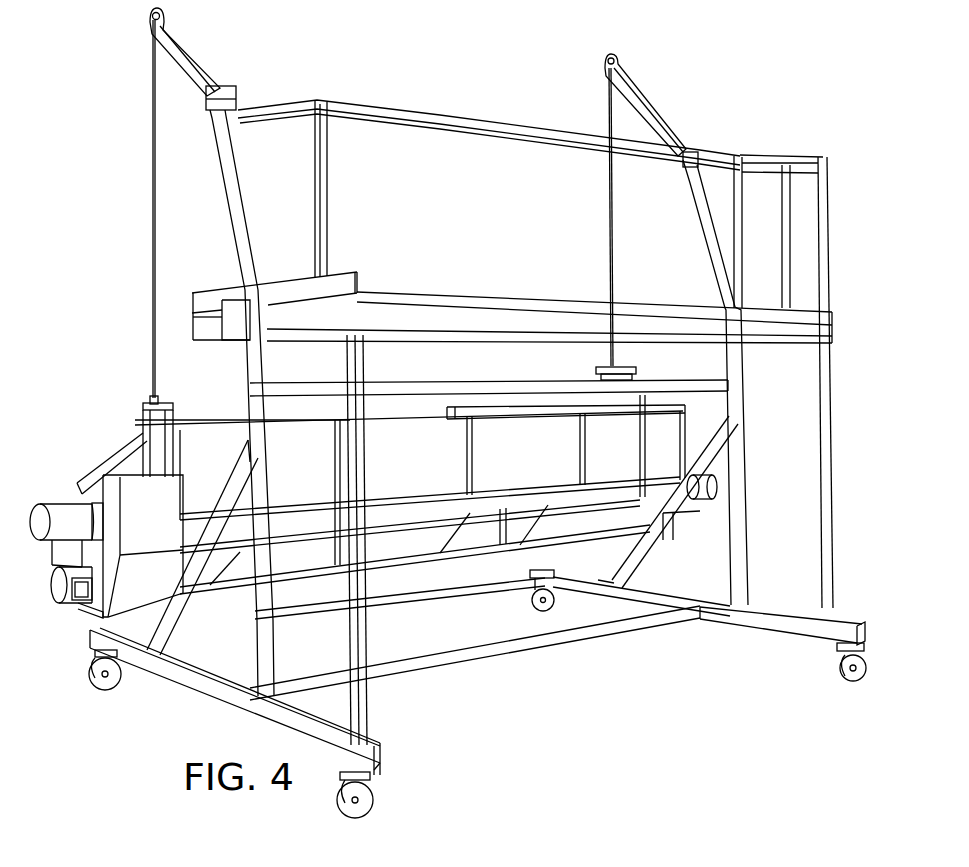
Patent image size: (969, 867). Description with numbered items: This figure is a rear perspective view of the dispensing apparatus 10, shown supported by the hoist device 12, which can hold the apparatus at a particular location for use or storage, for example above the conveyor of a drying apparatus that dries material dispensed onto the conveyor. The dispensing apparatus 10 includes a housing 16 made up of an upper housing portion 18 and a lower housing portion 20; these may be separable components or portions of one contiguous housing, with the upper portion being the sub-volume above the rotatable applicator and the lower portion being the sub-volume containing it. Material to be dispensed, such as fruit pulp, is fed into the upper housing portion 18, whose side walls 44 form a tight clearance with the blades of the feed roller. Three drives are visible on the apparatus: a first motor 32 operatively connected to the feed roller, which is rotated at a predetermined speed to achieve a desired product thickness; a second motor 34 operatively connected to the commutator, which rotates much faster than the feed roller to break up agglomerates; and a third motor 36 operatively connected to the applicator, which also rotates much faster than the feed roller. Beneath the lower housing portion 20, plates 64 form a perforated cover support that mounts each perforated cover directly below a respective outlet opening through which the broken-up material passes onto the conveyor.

The dispensing apparatus 10 is at (693, 416).
The hoist device 12 is at (197, 703).
The housing 16 is at (662, 451).
The upper housing portion 18 is at (410, 445).
The lower housing portion 20 is at (420, 545).
The first motor 32 is at (60, 510).
The second motor 34 is at (718, 484).
The third motor 36 is at (60, 600).
The side walls 44 is at (533, 466).
The plates 64 is at (482, 545).